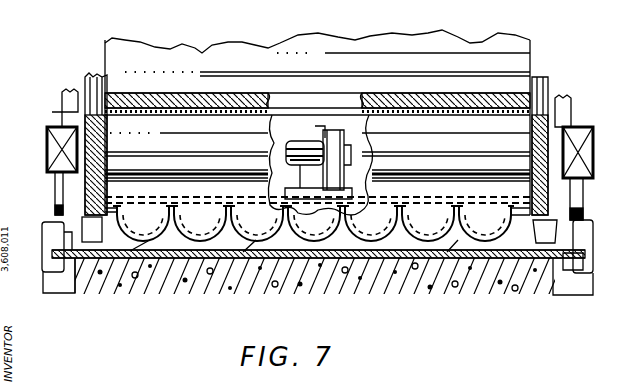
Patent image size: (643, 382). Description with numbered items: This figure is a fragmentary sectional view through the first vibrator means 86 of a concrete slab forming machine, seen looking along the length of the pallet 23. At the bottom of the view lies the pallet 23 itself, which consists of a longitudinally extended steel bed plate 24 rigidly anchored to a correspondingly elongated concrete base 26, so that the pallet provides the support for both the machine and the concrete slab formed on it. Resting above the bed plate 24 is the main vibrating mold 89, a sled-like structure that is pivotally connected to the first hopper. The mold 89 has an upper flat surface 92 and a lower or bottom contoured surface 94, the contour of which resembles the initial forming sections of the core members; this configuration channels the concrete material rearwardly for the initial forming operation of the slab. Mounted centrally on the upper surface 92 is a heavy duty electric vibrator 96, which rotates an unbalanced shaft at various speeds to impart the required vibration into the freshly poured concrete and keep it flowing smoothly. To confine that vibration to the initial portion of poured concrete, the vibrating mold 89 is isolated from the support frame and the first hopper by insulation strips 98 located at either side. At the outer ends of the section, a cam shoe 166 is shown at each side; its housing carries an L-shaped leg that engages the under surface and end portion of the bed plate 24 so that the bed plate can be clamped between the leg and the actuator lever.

The first vibrator means 86 is at (350, 138).
The electric vibrator 96 is at (322, 148).
The upper flat surface 92 is at (378, 160).
The insulation strips 98 is at (133, 100).
The cam shoe 166 is at (27, 228).
The bottom contoured surface 94 is at (458, 241).
The main vibrating mold 89 is at (318, 269).
The concrete base 26 is at (363, 290).
The bed plate 24 is at (284, 258).
The pallet 23 is at (143, 296).